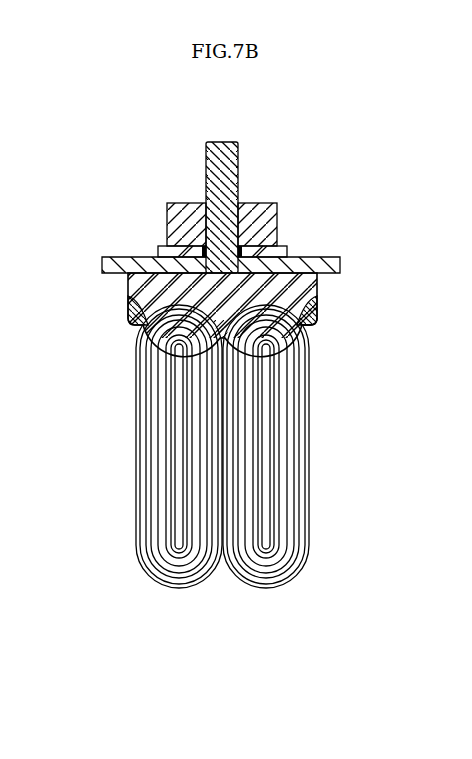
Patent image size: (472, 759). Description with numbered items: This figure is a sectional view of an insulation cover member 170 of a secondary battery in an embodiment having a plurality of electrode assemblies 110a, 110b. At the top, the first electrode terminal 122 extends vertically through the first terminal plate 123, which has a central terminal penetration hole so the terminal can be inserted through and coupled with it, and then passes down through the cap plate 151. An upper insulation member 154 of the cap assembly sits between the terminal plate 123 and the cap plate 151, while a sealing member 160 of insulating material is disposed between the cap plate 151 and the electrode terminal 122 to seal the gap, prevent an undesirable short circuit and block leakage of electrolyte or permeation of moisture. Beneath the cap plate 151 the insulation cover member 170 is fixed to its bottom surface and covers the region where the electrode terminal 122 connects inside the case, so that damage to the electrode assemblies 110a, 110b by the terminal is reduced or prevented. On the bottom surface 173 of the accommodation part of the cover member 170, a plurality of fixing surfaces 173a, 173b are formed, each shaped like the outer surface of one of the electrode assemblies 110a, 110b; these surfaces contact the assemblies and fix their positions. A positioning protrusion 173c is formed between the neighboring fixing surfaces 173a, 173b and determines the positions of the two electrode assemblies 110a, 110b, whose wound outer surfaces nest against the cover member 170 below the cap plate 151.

The first electrode terminal 122 is at (199, 134).
The first terminal plate 123 is at (266, 192).
The sealing member 160 is at (167, 245).
The upper insulation member 154 is at (157, 248).
The cap plate 151 is at (110, 264).
The insulation cover member 170 is at (326, 290).
The bottom surface 173 is at (305, 332).
The fixing surface 173a is at (145, 293).
The fixing surface 173b is at (308, 307).
The positioning protrusion 173c is at (226, 352).
The electrode assembly 110a is at (172, 455).
The electrode assembly 110b is at (275, 455).